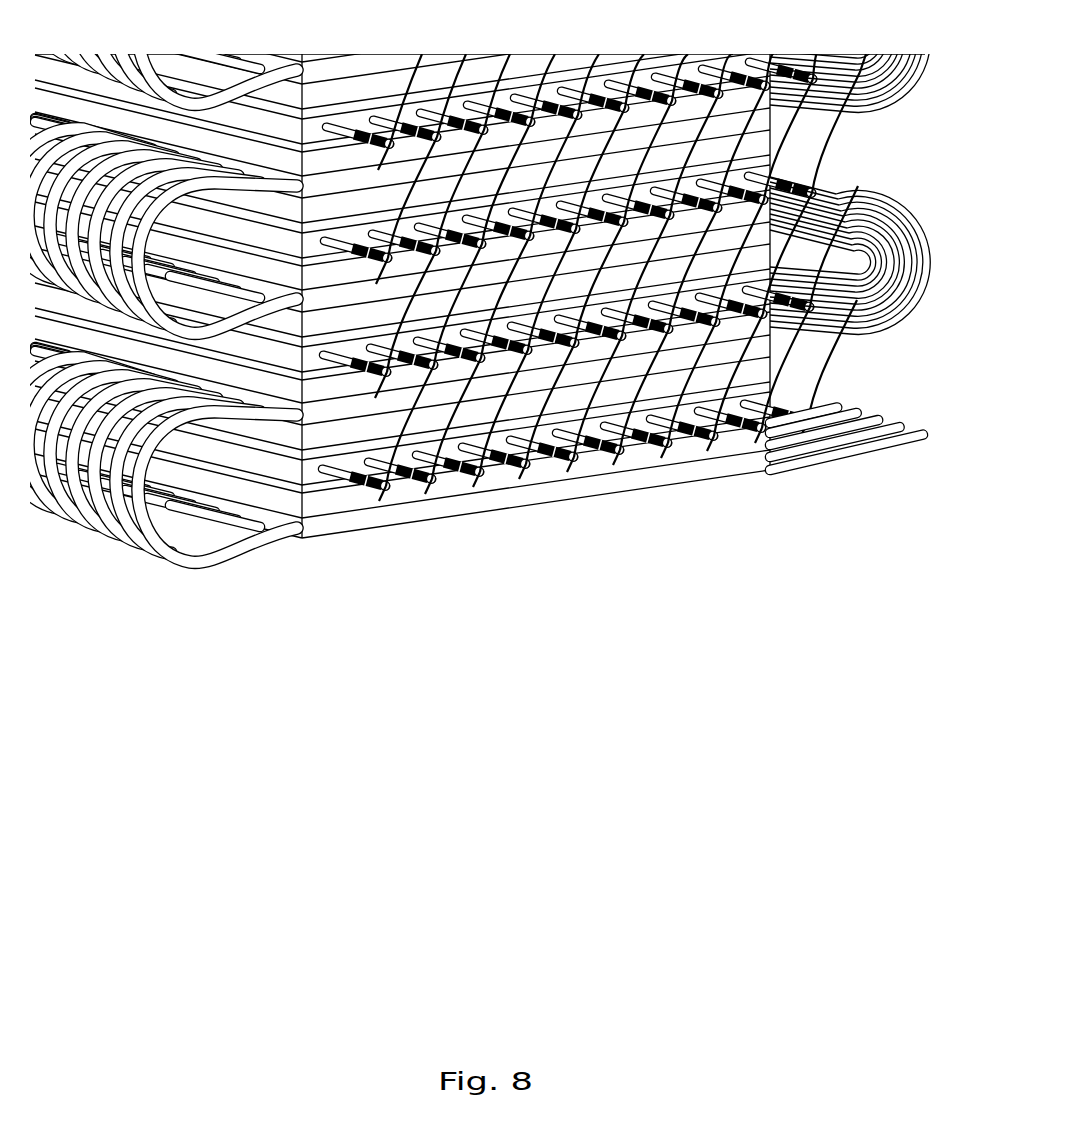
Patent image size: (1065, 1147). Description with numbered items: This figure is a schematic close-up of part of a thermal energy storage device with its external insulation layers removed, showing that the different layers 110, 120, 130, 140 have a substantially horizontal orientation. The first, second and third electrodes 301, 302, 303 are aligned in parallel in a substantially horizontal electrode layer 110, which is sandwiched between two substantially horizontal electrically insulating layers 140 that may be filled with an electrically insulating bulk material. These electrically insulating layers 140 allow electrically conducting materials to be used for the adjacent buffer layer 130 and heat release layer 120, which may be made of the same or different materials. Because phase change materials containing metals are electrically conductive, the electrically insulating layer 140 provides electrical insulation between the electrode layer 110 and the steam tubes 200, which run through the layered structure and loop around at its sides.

The electrode layer 110 is at (283, 472).
The heat release layer 120 is at (312, 418).
The buffer layer 130 is at (287, 437).
The electrically insulating layer 140 is at (318, 458).
The steam tubes 200 is at (142, 528).
The first electrode 301 is at (528, 475).
The second electrode 302 is at (573, 468).
The third electrode 303 is at (622, 462).